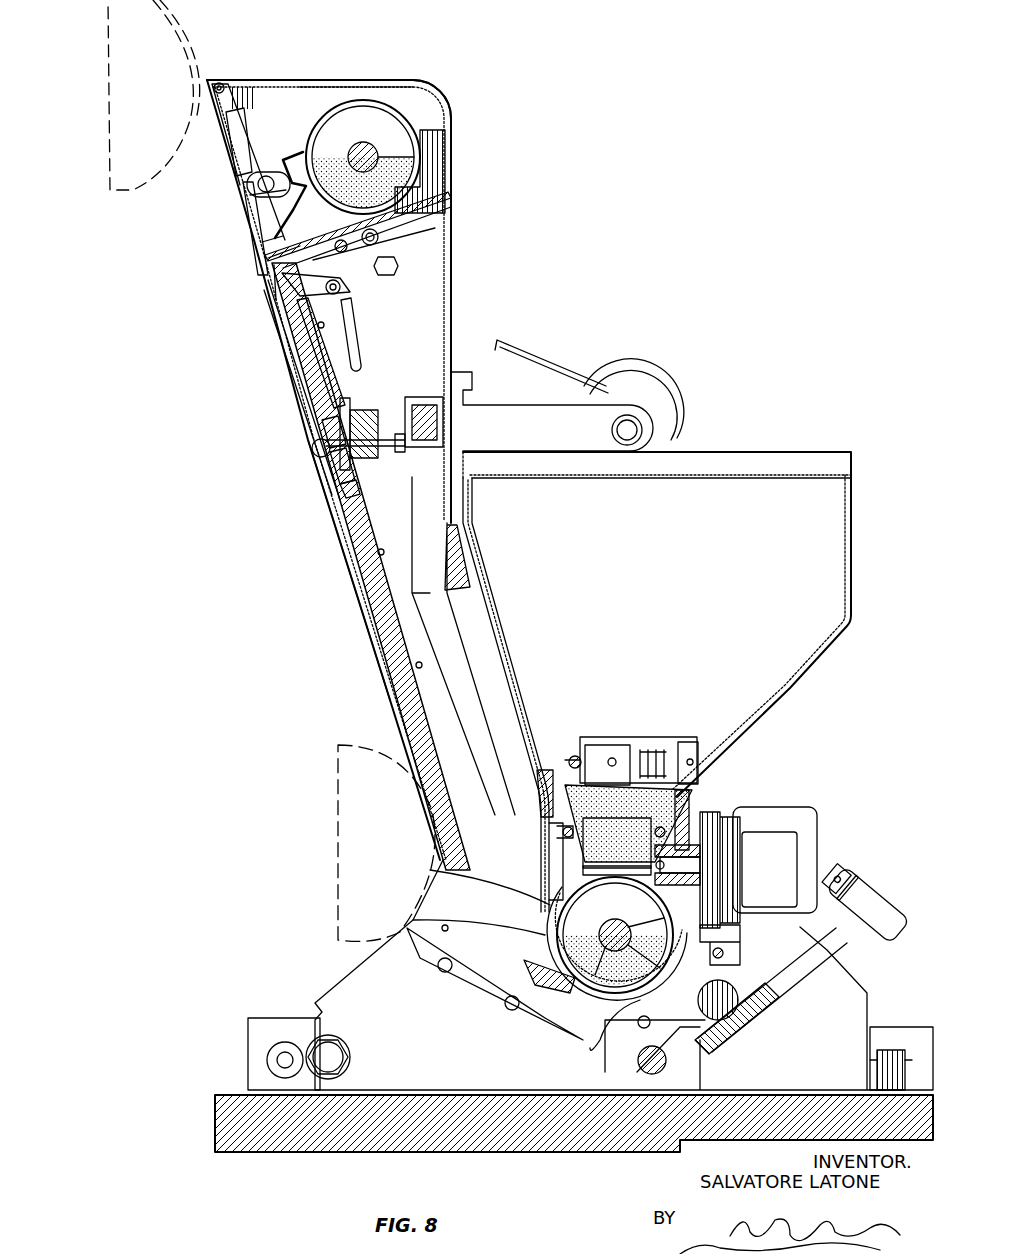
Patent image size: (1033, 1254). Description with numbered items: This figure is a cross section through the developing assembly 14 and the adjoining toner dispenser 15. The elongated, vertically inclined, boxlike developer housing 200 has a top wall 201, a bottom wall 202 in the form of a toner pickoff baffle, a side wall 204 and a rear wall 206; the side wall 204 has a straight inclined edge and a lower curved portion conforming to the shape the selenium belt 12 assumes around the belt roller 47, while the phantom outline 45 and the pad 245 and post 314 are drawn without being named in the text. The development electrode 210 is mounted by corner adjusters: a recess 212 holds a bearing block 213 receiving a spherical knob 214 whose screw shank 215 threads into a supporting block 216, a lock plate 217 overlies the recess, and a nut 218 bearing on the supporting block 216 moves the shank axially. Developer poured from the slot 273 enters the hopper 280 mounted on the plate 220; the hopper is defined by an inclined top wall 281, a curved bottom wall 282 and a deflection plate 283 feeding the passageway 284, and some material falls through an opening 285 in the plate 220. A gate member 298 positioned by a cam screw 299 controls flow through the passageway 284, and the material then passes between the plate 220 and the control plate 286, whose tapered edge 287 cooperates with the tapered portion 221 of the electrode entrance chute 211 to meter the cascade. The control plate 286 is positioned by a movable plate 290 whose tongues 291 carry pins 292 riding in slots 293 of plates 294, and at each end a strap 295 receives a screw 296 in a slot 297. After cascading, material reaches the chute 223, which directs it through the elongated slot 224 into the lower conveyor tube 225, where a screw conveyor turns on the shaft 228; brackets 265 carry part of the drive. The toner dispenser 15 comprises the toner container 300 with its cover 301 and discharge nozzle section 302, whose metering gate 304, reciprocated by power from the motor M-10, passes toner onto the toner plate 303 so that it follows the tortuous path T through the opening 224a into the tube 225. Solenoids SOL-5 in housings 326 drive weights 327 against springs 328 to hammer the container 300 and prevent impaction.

The selenium belt 12 is at (335, 522).
The developing assembly 14 is at (556, 212).
The toner dispenser 15 is at (786, 400).
The phantom member 45 is at (135, 192).
The belt roller 47 is at (345, 748).
The developer housing 200 is at (452, 258).
The top wall 201 is at (380, 85).
The bottom wall 202 is at (470, 902).
The side wall 204 is at (470, 590).
The rear wall 206 is at (500, 638).
The development electrode 210 is at (378, 660).
The electrode entrance chute 211 is at (290, 350).
The recess 212 is at (330, 466).
The bearing block 213 is at (312, 432).
The spherical knob 214 is at (312, 448).
The screw shank 215 is at (352, 470).
The supporting block 216 is at (372, 392).
The lock plate 217 is at (342, 488).
The nut 218 is at (370, 460).
The plate 220 is at (450, 195).
The tapered portion 221 is at (270, 310).
The chute 223 is at (524, 965).
The elongated slot 224 is at (586, 945).
The opening 224a is at (720, 925).
The lower conveyor tube 225 is at (592, 1046).
The shaft 228 is at (629, 947).
The pad 245 is at (446, 140).
The brackets 265 is at (560, 410).
The slot 273 is at (365, 155).
The hopper 280 is at (300, 152).
The inclined top wall 281 is at (248, 228).
The curved bottom wall 282 is at (310, 247).
The deflection plate 283 is at (366, 142).
The passageway 284 is at (268, 262).
The opening 285 is at (345, 255).
The control plate 286 is at (262, 244).
The tapered edge 287 is at (262, 282).
The movable plate 290 is at (226, 160).
The tongues 291 is at (217, 80).
The pins 292 is at (212, 90).
The slots 293 is at (240, 112).
The plates 294 is at (325, 95).
The strap 295 is at (320, 296).
The screw 296 is at (352, 320).
The slot 297 is at (300, 375).
The gate member 298 is at (250, 196).
The cam screw 299 is at (245, 186).
The toner container 300 is at (851, 556).
The cover 301 is at (795, 470).
The discharge nozzle section 302 is at (617, 841).
The toner plate 303 is at (668, 920).
The metering gate 304 is at (617, 857).
The post 314 is at (660, 796).
The housings 326 is at (618, 737).
The weight 327 is at (718, 730).
The spring 328 is at (652, 750).
The solenoids SOL-5 is at (575, 755).
The motor M-10 is at (817, 834).
The path of toner fall T is at (555, 884).